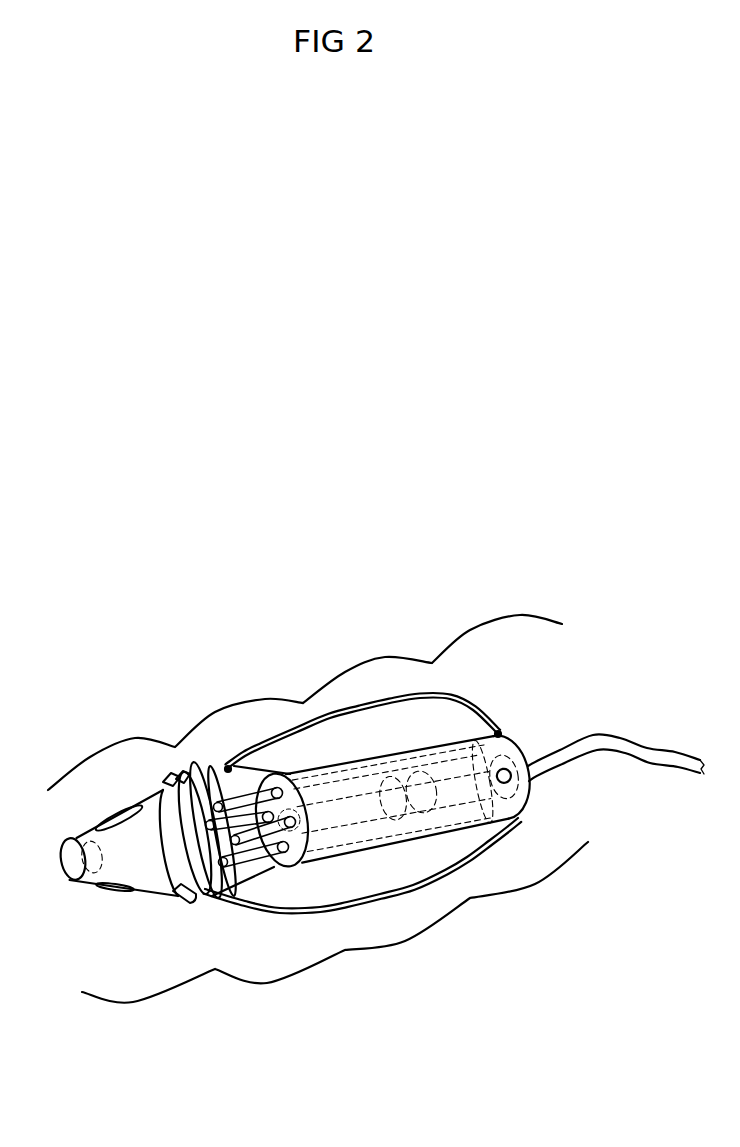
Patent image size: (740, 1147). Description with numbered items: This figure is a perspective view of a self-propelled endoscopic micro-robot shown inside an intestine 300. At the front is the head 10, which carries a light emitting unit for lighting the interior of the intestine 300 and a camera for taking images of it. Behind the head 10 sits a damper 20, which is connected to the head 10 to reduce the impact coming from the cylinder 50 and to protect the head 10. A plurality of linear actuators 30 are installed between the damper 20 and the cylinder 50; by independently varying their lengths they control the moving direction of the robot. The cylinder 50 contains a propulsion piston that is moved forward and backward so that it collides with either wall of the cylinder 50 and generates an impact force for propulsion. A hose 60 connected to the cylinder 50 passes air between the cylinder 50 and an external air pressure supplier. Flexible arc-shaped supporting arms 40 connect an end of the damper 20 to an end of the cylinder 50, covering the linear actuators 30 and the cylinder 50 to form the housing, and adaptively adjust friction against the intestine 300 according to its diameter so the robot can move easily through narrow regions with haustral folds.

The head 10 is at (140, 798).
The damper 20 is at (172, 778).
The linear actuators 30 is at (262, 792).
The flexible arc-shaped supporting arms 40 is at (343, 710).
The cylinder 50 is at (457, 740).
The hose 60 is at (647, 750).
The intestine 300 is at (110, 997).